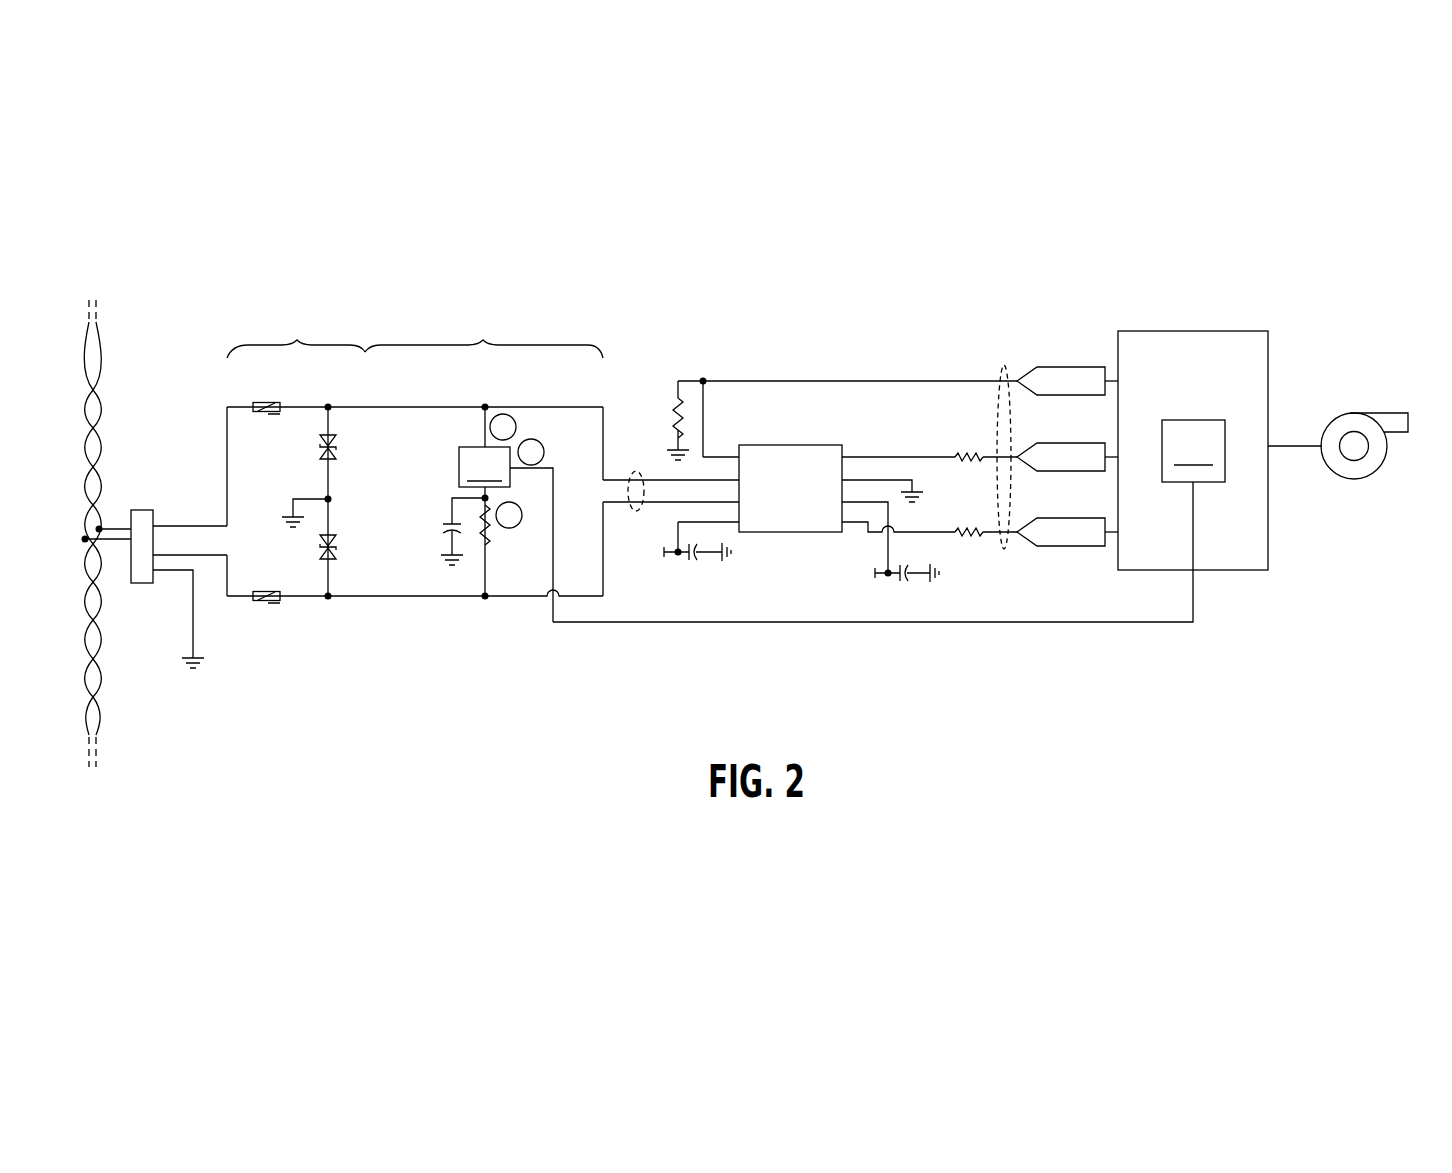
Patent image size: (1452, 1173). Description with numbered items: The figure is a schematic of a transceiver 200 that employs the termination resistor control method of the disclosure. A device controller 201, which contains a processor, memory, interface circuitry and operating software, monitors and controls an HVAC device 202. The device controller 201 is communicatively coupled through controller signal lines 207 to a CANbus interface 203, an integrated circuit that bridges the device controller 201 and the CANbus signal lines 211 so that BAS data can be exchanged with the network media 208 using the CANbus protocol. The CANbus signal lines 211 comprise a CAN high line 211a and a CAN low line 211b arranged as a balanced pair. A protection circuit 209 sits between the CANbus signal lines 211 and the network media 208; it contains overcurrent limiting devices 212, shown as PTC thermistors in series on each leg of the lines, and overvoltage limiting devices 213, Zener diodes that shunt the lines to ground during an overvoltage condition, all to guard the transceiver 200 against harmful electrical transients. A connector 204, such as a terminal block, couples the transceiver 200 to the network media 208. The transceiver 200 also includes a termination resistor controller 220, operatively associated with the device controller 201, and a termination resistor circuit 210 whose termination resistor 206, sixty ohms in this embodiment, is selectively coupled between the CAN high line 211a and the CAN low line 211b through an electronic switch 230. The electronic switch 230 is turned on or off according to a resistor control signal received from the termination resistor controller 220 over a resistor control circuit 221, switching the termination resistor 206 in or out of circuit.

The RS-485 transceiver 200 is at (580, 290).
The device controller 201 is at (1213, 433).
The HVAC device 202 is at (1352, 413).
The CANbus interface 203 is at (803, 445).
The connector 204 is at (131, 510).
The termination resistor 206 is at (490, 542).
The controller signal lines 207 is at (998, 358).
The network media 208 is at (112, 712).
The protection circuit 209 is at (297, 477).
The termination resistor circuit 210 is at (484, 489).
The CANbus signal lines 211 is at (638, 466).
The CAN high line 211a is at (412, 405).
The CAN low line 211b is at (373, 598).
The overcurrent limiting device 212 is at (258, 403).
The overvoltage limiting device 213 is at (320, 444).
The termination resistor controller 220 is at (1193, 451).
The resistor control circuit 221 is at (826, 622).
The electronic switch 230 is at (484, 467).